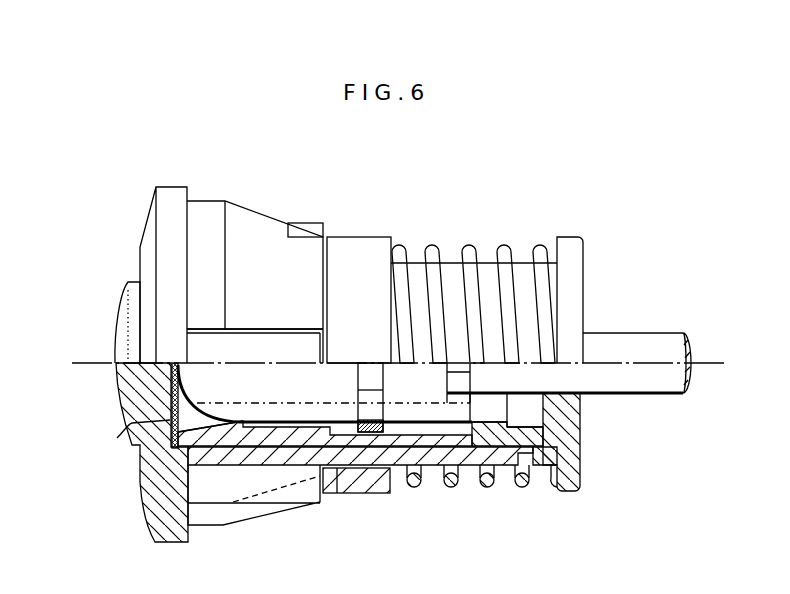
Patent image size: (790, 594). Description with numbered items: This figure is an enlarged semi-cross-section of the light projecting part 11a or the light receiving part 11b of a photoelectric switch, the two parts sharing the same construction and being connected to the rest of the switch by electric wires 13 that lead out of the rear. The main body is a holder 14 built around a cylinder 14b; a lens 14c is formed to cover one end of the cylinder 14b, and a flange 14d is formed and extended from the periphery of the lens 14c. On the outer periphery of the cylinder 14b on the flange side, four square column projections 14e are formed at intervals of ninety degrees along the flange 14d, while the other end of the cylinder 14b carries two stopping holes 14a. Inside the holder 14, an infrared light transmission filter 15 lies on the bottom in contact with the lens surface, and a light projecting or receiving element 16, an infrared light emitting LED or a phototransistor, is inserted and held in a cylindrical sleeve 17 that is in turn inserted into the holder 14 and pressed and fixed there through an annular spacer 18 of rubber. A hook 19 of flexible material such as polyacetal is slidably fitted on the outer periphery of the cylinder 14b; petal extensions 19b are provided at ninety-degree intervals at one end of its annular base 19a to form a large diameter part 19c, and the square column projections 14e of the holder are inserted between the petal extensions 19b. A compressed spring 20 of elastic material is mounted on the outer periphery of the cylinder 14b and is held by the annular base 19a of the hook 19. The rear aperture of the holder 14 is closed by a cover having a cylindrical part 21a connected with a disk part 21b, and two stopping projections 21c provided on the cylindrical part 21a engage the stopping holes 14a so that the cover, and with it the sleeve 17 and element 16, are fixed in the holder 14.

The light projecting part 11a is at (505, 227).
The light receiving part 11b is at (535, 217).
The electric wires 13 is at (635, 393).
The holder 14 is at (372, 470).
The stopping holes 14a is at (502, 470).
The cylinder 14b is at (430, 467).
The lens 14c is at (130, 403).
The flange 14d is at (165, 532).
The square column projections 14e is at (308, 222).
The infrared light transmission filter 15 is at (126, 439).
The light projecting or receiving element 16 is at (257, 408).
The cylindrical sleeve 17 is at (333, 443).
The annular spacer 18 is at (473, 466).
The hook 19 is at (250, 209).
The annular base 19a is at (370, 237).
The petal extensions 19b is at (207, 201).
The large diameter part 19c is at (243, 327).
The compressed spring 20 is at (467, 245).
The cylindrical part 21a is at (527, 435).
The disk part 21b is at (582, 487).
The stopping projections 21c is at (537, 473).